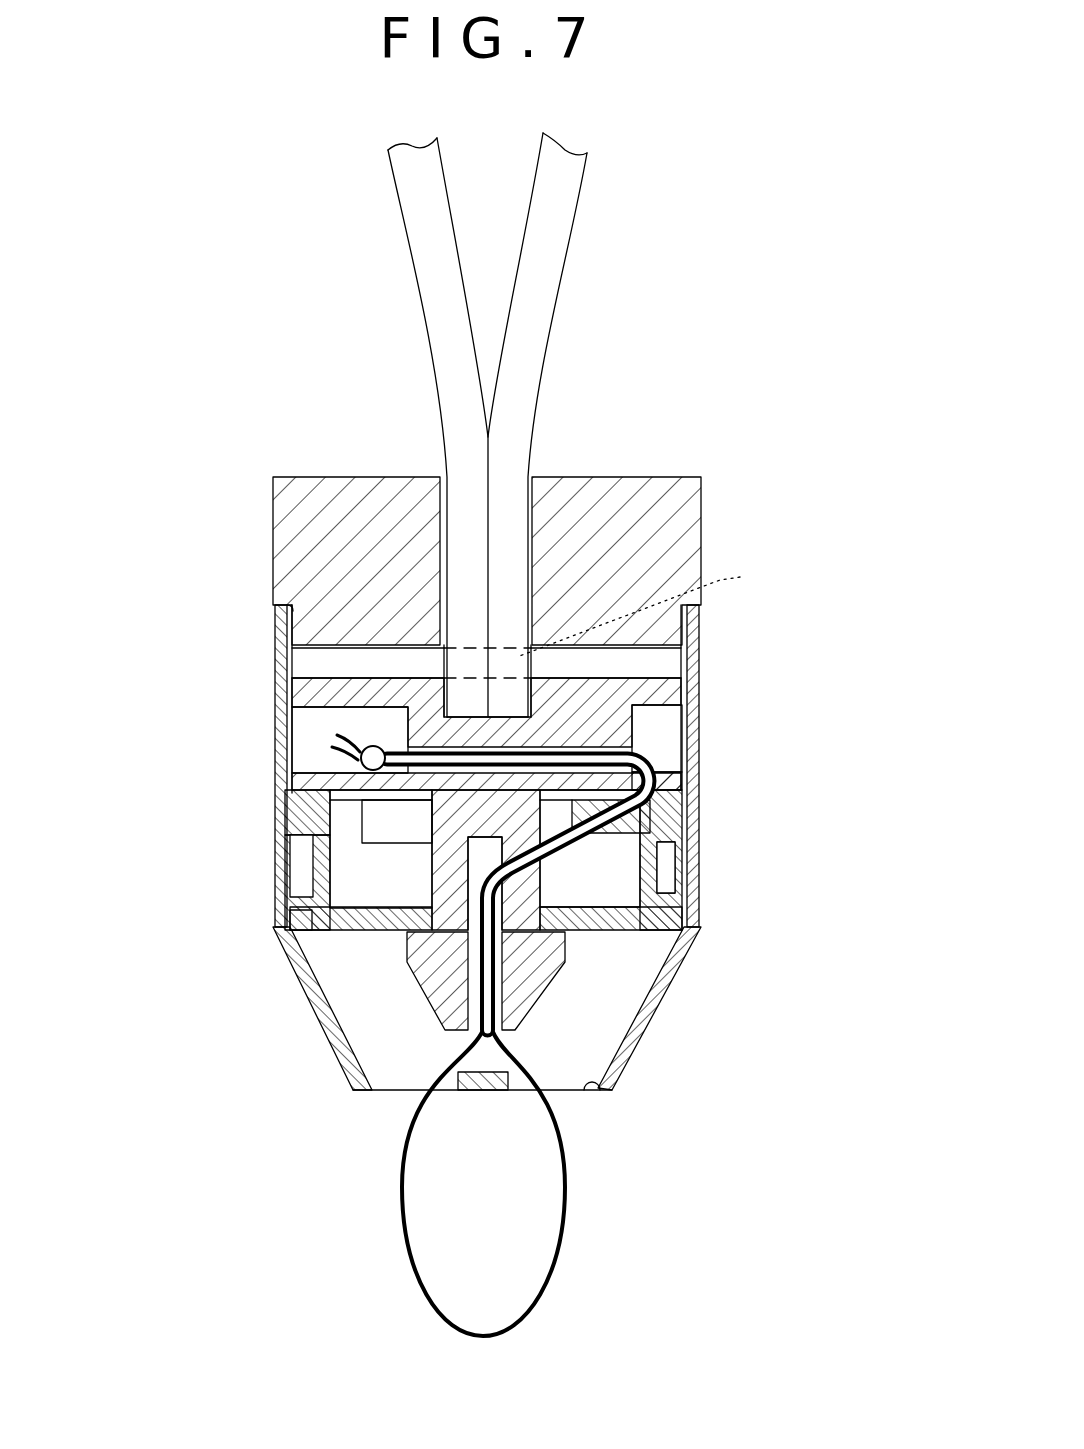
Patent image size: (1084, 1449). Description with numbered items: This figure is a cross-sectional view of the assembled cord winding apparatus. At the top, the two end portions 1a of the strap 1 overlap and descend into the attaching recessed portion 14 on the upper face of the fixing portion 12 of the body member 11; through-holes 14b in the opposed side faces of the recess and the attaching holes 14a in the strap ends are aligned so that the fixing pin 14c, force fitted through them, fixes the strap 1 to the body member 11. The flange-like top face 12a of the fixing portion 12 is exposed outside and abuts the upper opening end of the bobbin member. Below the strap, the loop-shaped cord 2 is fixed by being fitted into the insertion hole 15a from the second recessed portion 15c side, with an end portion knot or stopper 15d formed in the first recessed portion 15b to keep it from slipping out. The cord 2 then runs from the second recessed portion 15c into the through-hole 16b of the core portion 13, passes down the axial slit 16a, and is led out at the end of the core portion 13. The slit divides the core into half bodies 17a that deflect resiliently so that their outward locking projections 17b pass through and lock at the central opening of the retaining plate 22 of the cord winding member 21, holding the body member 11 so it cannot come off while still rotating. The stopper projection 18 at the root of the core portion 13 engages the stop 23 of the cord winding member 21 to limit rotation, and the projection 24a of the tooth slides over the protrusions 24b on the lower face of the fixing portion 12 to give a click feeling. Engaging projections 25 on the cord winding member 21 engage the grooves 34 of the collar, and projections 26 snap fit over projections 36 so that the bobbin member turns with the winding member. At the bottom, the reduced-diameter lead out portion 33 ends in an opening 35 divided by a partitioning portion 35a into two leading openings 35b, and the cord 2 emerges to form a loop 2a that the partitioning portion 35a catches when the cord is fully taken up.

The strap 1 is at (515, 425).
The end portion of the strap 1a is at (447, 403).
The loop-shaped cord 2 is at (523, 1184).
The loop 2a is at (552, 1282).
The body member 11 is at (485, 789).
The fixing portion 12 is at (278, 631).
The top face 12a is at (292, 498).
The core portion 13 is at (653, 827).
The attaching recessed portion 14 is at (527, 480).
The attaching hole 14a is at (652, 609).
The through-hole 14b is at (290, 673).
The fixing pin 14c is at (663, 663).
The insertion hole 15a is at (650, 752).
The first recessed portion 15b is at (300, 715).
The second recessed portion 15c is at (695, 710).
The end portion knot or stopper 15d is at (345, 762).
The slit 16a is at (433, 993).
The through-hole 16b is at (639, 859).
The half body 17a is at (440, 948).
The locking projection 17b is at (445, 1005).
The stopper projection 18 is at (362, 835).
The cord winding member 21 is at (296, 887).
The retaining plate 22 is at (597, 932).
The stop 23 is at (343, 813).
The projection 24a is at (681, 807).
The protrusion 24b is at (660, 777).
The engaging projection 25 is at (302, 800).
The projection 26 is at (292, 930).
The lead out portion 33 is at (623, 1050).
The engaging groove 34 is at (287, 604).
The opening 35 is at (484, 1141).
The partitioning portion 35a is at (490, 1090).
The leading opening 35b is at (455, 1090).
The projection 36 is at (298, 910).